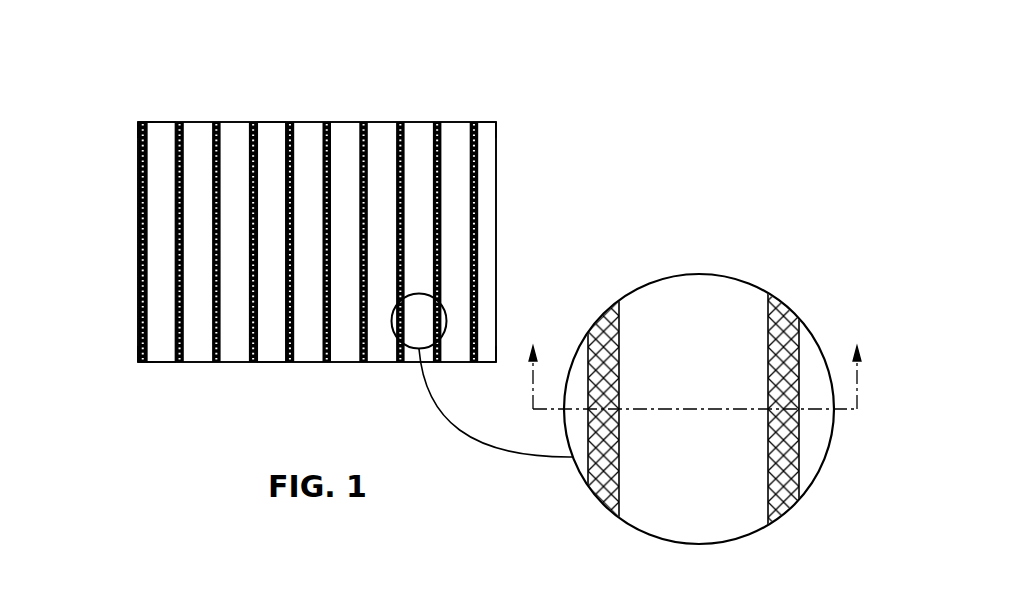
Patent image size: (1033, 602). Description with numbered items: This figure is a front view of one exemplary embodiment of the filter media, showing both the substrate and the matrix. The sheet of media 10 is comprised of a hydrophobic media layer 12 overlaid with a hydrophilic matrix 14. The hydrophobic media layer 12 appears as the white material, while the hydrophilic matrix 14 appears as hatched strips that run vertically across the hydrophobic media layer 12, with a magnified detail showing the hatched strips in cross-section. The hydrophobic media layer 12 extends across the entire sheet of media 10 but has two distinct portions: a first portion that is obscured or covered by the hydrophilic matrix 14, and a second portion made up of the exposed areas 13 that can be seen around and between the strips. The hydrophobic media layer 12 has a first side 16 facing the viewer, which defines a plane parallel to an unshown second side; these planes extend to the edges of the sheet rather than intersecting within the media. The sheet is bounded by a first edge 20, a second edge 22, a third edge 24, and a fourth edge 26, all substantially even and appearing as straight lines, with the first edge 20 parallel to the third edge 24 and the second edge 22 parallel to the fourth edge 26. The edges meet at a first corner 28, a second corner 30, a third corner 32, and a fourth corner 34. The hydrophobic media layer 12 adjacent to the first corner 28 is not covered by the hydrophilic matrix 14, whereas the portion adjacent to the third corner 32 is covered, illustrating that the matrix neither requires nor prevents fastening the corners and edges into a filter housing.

The sheet of media 10 is at (337, 238).
The hydrophobic media layer 12 is at (275, 128).
The exposed areas 13 is at (421, 118).
The hydrophilic matrix 14 is at (182, 122).
The first side 16 is at (168, 352).
The first edge 20 is at (316, 118).
The second edge 22 is at (500, 224).
The third edge 24 is at (232, 365).
The fourth edge 26 is at (136, 222).
The first corner 28 is at (498, 122).
The second corner 30 is at (496, 363).
The third corner 32 is at (138, 362).
The fourth corner 34 is at (138, 122).